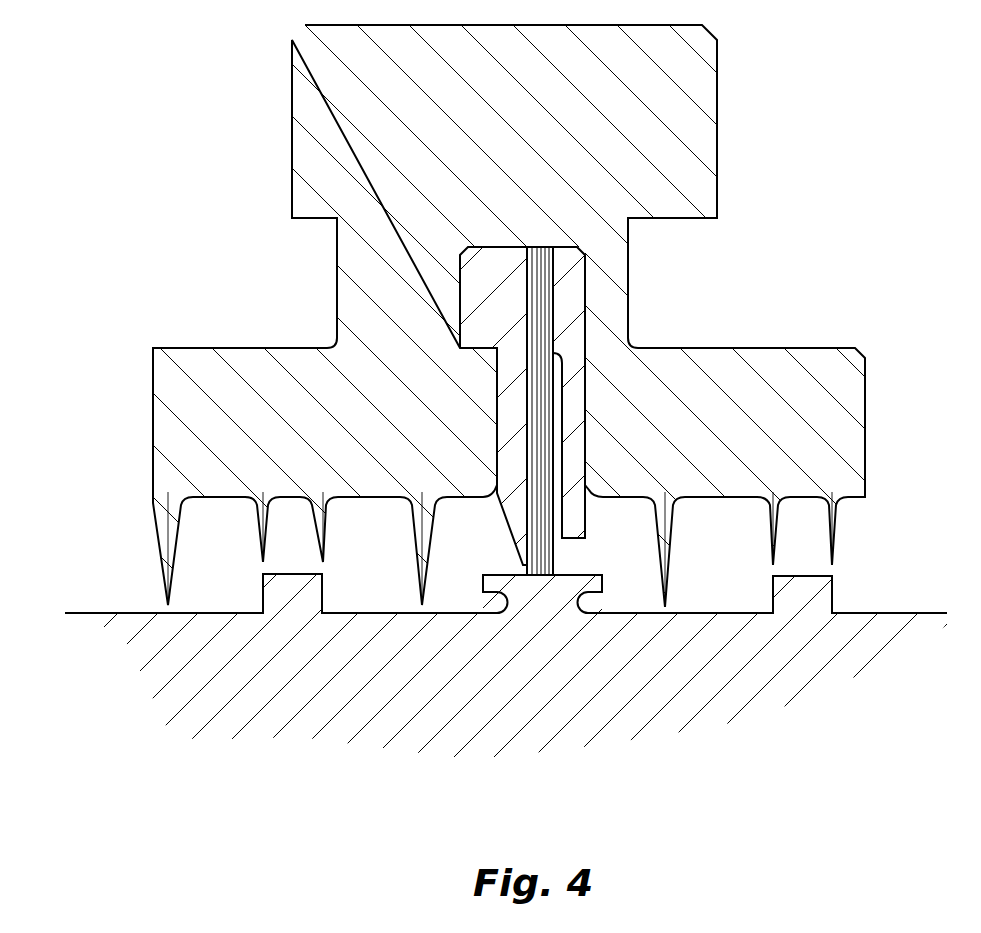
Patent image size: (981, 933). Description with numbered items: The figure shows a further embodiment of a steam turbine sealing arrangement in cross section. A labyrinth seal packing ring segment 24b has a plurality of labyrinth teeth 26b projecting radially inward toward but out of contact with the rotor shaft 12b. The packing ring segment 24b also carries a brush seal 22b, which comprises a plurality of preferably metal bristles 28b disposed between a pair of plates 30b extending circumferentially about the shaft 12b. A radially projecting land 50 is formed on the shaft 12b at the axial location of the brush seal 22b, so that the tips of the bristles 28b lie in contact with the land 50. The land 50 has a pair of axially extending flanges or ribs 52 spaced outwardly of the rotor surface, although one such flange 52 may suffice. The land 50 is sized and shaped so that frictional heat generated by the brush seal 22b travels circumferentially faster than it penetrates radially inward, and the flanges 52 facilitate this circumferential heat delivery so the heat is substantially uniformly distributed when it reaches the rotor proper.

The rotor shaft 12b is at (100, 613).
The brush seal 22b is at (588, 300).
The labyrinth seal packing ring segment 24b is at (347, 249).
The labyrinth teeth 26b is at (160, 548).
The bristles 28b is at (528, 430).
The plates 30b is at (507, 381).
The land 50 is at (542, 598).
The flanges 52 is at (497, 597).